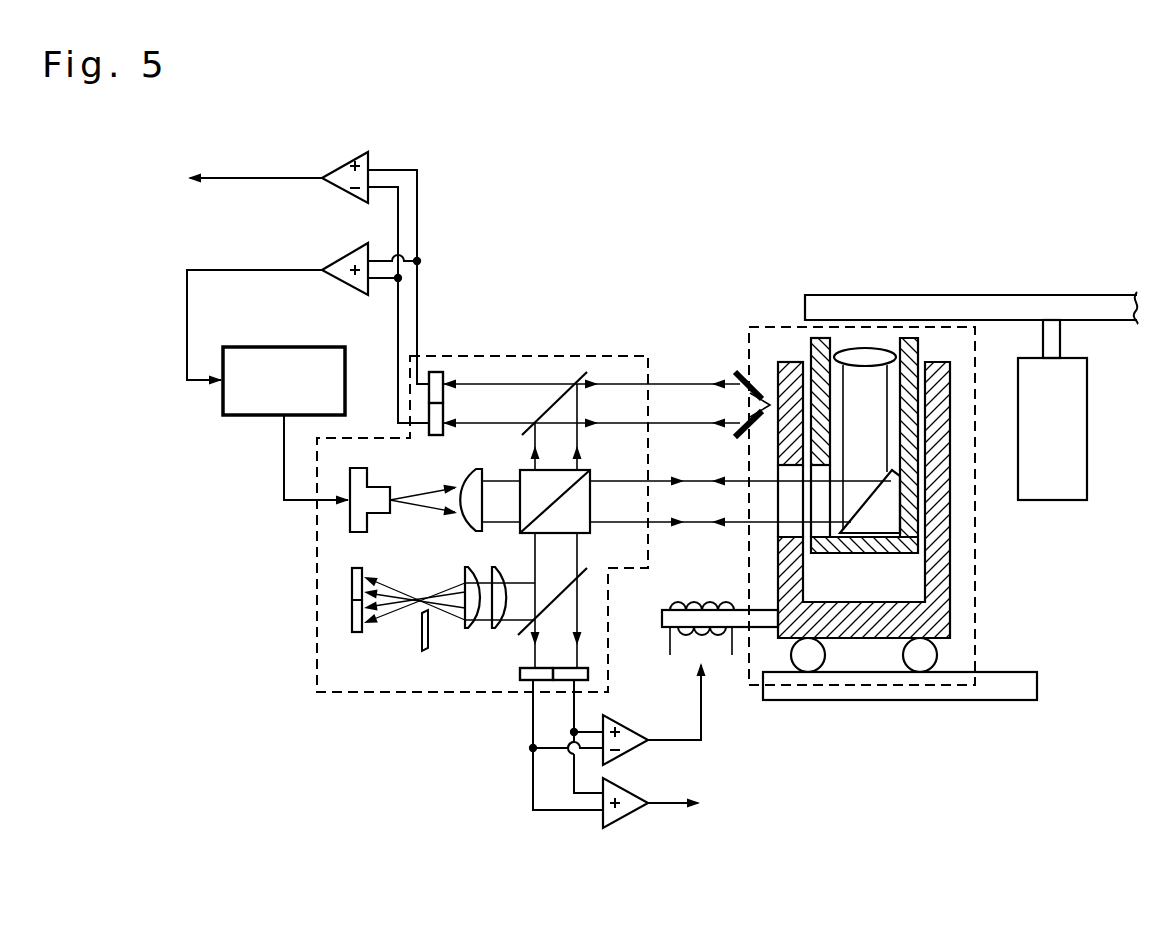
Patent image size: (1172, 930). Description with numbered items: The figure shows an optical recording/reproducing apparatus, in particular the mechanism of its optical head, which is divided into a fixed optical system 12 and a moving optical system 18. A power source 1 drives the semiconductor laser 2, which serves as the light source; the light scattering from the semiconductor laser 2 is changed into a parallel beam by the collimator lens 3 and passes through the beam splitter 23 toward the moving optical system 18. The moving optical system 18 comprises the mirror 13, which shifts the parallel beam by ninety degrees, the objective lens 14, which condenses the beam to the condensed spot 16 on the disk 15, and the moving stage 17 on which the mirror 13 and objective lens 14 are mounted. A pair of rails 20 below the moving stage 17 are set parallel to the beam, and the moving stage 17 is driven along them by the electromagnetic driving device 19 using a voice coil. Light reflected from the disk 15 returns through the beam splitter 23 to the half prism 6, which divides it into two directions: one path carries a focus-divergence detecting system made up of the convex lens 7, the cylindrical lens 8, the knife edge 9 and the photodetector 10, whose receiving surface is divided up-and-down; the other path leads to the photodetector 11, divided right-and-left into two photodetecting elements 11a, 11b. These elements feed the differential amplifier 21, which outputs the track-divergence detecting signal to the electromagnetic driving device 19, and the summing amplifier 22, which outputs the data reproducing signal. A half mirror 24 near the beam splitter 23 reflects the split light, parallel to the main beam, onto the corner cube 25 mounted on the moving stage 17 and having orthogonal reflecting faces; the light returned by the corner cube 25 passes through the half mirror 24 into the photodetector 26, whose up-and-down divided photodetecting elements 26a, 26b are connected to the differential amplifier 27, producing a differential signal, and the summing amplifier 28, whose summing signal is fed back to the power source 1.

The power source 1 is at (295, 347).
The semiconductor laser 2 is at (350, 522).
The collimator lens 3 is at (478, 469).
The half prism 6 is at (595, 573).
The convex lens 7 is at (497, 628).
The cylindrical lens 8 is at (470, 628).
The knife edge 9 is at (425, 650).
The photodetector 10 is at (356, 632).
The photodetector 11 is at (552, 683).
The photodetecting element 11a is at (590, 676).
The photodetecting element 11b is at (520, 683).
The fixed optical system 12 is at (619, 350).
The mirror 13 is at (888, 503).
The objective lens 14 is at (890, 353).
The disk 15 is at (996, 295).
The condensed spot 16 is at (838, 356).
The moving stage 17 is at (948, 585).
The moving optical system 18 is at (776, 323).
The electromagnetic driving device 19 is at (723, 660).
The rails 20 is at (1000, 672).
The differential amplifier 21 is at (640, 757).
The summing amplifier 22 is at (638, 820).
The beam splitter 23 is at (522, 468).
The half mirror 24 is at (581, 372).
The corner cube 25 is at (736, 372).
The photodetector 26 is at (429, 402).
The photodetecting element 26a is at (441, 372).
The photodetecting element 26b is at (428, 440).
The differential amplifier 27 is at (335, 162).
The summing amplifier 28 is at (335, 257).